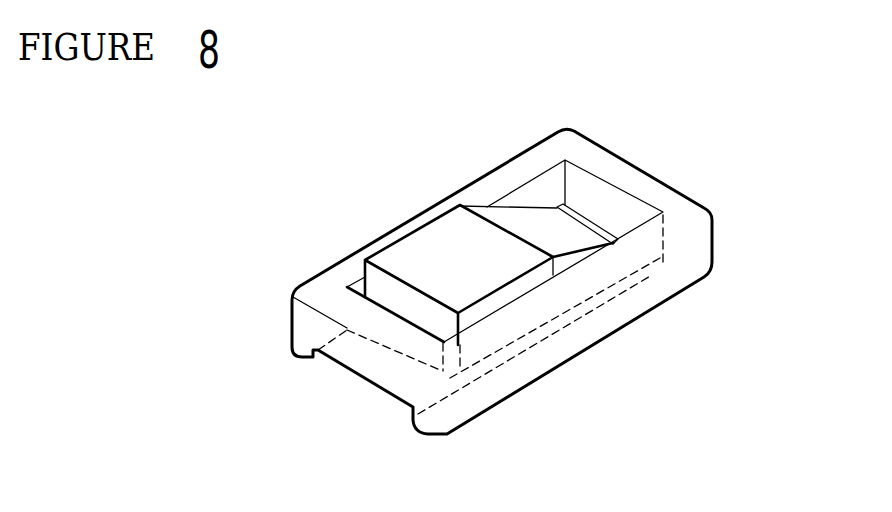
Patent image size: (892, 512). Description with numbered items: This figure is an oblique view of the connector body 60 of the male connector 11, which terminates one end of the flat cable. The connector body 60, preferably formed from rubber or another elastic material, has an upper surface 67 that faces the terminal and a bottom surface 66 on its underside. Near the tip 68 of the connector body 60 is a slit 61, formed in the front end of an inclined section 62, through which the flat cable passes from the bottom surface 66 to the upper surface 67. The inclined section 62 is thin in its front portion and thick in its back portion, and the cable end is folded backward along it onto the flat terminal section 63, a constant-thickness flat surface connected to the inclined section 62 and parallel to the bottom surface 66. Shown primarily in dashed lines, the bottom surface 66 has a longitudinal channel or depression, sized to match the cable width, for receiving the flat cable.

The male connector 11 is at (511, 232).
The connector body 60 is at (453, 255).
The slit 61 is at (600, 240).
The inclined section 62 is at (520, 213).
The flat terminal section 63 is at (425, 243).
The bottom surface 66 is at (337, 394).
The upper surface 67 is at (514, 177).
The tip 68 is at (597, 160).